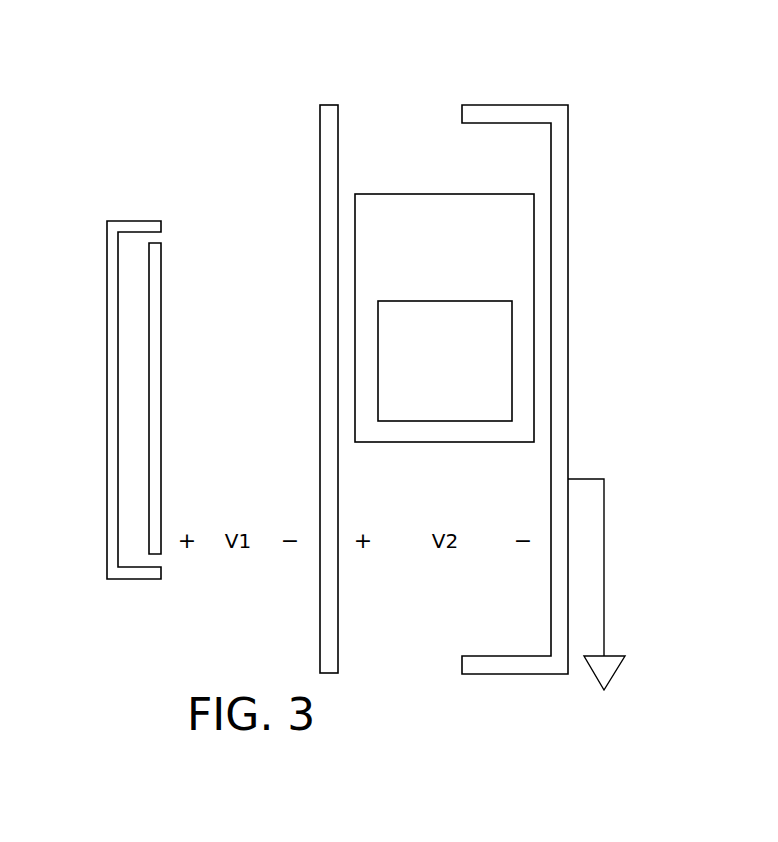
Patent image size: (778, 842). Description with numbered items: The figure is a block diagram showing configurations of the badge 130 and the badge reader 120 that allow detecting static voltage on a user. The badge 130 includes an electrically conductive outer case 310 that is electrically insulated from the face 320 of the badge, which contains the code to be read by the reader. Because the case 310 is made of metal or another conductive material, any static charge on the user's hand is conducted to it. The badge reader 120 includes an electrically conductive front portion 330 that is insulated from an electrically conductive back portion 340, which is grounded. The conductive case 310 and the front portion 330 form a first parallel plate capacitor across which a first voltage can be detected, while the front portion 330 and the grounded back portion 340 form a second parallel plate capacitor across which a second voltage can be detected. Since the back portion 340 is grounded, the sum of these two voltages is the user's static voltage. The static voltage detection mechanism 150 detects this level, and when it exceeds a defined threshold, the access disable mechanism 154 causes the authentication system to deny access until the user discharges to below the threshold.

The badge reader 120 is at (503, 373).
The badge 130 is at (145, 356).
The static voltage detection mechanism 150 is at (452, 194).
The access disable mechanism 154 is at (445, 421).
The electrically conductive outer case 310 is at (107, 283).
The face of the badge 320 is at (162, 301).
The front portion of the badge reader 330 is at (320, 140).
The back portion of the badge reader 340 is at (569, 372).